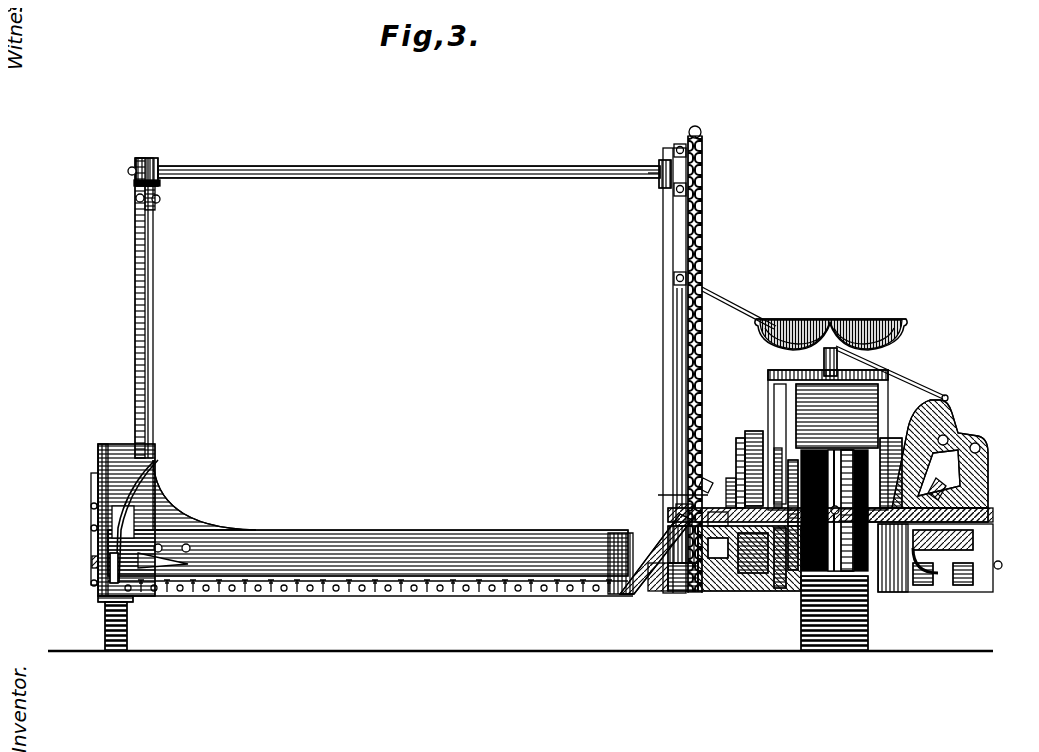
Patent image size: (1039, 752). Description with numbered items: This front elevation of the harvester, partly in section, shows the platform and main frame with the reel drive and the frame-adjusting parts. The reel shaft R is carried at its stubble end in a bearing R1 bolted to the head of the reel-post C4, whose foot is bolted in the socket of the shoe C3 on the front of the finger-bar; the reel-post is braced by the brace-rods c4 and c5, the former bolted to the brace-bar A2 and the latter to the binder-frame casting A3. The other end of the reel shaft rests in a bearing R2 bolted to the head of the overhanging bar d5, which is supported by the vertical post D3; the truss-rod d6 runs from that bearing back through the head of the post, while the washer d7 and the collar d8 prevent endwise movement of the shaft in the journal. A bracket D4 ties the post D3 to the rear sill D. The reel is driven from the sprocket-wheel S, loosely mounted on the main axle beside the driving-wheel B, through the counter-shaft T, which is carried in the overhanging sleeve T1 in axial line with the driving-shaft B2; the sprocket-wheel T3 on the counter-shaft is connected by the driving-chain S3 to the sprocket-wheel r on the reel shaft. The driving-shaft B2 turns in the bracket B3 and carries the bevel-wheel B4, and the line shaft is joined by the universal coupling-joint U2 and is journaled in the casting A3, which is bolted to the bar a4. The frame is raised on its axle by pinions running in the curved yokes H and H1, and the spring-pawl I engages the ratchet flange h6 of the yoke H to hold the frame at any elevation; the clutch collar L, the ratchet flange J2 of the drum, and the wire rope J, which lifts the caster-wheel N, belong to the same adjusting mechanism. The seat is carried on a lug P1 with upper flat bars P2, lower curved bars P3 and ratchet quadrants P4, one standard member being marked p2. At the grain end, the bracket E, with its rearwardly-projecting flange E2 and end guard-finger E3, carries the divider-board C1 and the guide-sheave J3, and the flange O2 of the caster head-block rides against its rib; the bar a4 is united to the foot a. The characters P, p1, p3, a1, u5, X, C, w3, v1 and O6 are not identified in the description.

The overhanging bar d5 is at (148, 278).
The truss-rod d6 is at (152, 191).
The washer d7 is at (146, 152).
The collar d8 is at (160, 160).
The reel shaft R is at (536, 171).
The bearing R1 is at (659, 164).
The bearing R2 is at (146, 158).
The lever pin p1 is at (654, 176).
The seat-supporting standard member p2 is at (882, 405).
The pan stem p3 is at (815, 362).
The sprocket-wheel r is at (695, 172).
The reel-post C4 is at (660, 250).
The driving-chain S3 is at (695, 252).
The brace-rod c5 is at (724, 300).
The brace-rod c4 is at (658, 418).
The scale pan P is at (831, 323).
The downwardly-projecting lug P1 is at (892, 373).
The flat bars P2 is at (762, 384).
The bars P3 is at (827, 613).
The quadrants P4 is at (900, 450).
The driving-wheel B is at (819, 427).
The driving-shaft B2 is at (982, 505).
The bracket B3 is at (946, 557).
The bevel-wheel B4 is at (932, 478).
The yoke H is at (749, 461).
The yoke H1 is at (897, 465).
The projecting flange h6 is at (732, 442).
The sprocket-wheel S is at (793, 508).
The counter-shaft T is at (828, 507).
The overhanging sleeve T1 is at (729, 522).
The sprocket-wheel T3 is at (673, 515).
The casting A3 is at (955, 432).
The brace-bar A2 is at (886, 585).
The foot a is at (938, 567).
The base pin a1 is at (990, 560).
The bar a4 is at (985, 518).
The bearing u5 is at (916, 606).
The universal coupling-joint U2 is at (936, 584).
The collar L is at (682, 493).
The wire rope J is at (72, 540).
The enlarged flange J2 is at (706, 482).
The guide-sheave J3 is at (84, 574).
The spring-pawl I is at (731, 486).
The rear sill D is at (370, 563).
The vertical post D3 is at (118, 409).
The bracket D4 is at (150, 510).
The rivet row X is at (248, 586).
The carriage C is at (712, 586).
The divider-board C1 is at (84, 556).
The shoe C3 is at (148, 466).
The worm w3 is at (746, 584).
The link v1 is at (165, 555).
The bracket E is at (128, 520).
The rearwardly-projecting flange E2 is at (84, 480).
The end guard-finger E3 is at (118, 592).
The projecting flange O2 is at (82, 496).
The stud O6 is at (82, 520).
The caster-wheel N is at (125, 626).